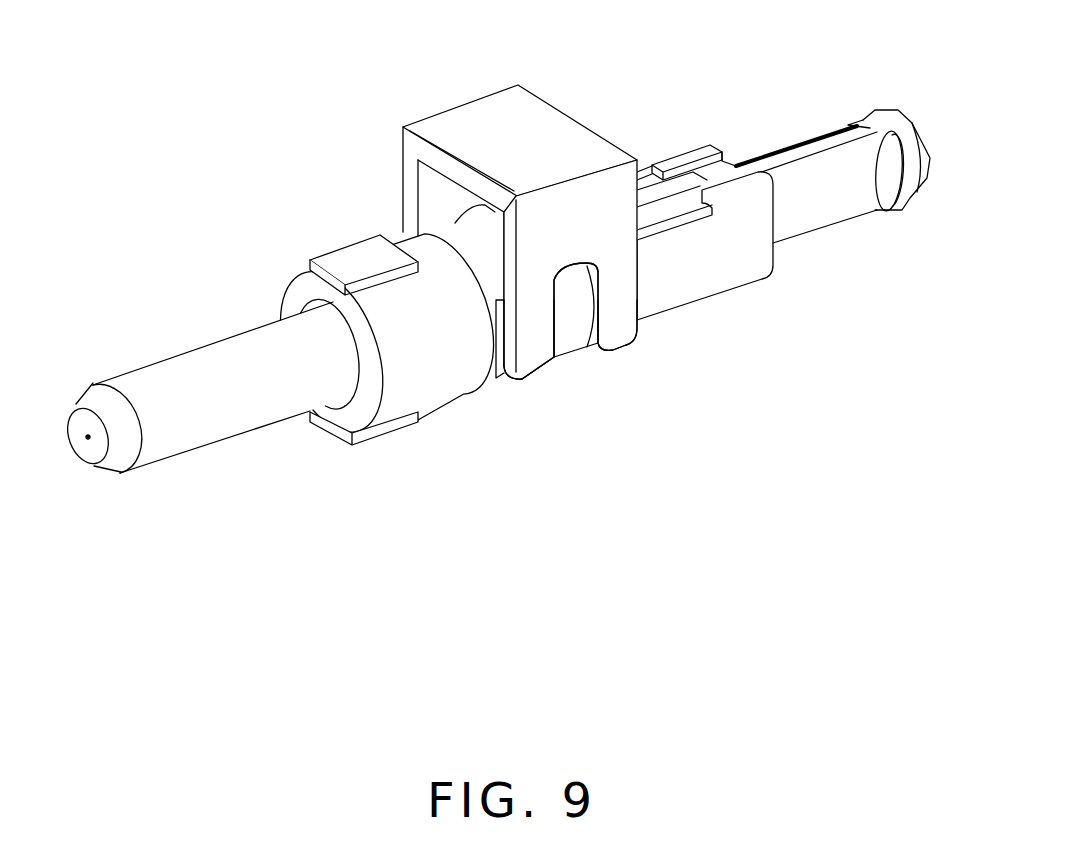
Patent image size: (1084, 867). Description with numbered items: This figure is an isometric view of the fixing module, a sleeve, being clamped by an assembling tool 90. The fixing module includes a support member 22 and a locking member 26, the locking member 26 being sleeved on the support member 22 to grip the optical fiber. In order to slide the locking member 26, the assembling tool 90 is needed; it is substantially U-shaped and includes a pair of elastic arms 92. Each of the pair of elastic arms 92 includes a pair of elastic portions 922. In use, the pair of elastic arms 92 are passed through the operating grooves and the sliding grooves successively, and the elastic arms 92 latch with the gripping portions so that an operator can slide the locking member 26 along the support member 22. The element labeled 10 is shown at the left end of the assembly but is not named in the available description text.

The cable 10 is at (188, 415).
The support member 22 is at (437, 368).
The locking member 26 is at (568, 318).
The assembling tool 90 is at (480, 113).
The elastic arms 92 is at (587, 217).
The elastic portions 922 is at (528, 350).